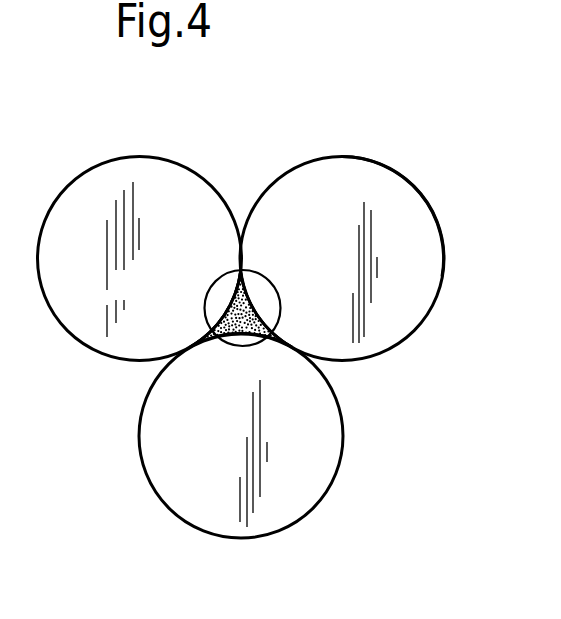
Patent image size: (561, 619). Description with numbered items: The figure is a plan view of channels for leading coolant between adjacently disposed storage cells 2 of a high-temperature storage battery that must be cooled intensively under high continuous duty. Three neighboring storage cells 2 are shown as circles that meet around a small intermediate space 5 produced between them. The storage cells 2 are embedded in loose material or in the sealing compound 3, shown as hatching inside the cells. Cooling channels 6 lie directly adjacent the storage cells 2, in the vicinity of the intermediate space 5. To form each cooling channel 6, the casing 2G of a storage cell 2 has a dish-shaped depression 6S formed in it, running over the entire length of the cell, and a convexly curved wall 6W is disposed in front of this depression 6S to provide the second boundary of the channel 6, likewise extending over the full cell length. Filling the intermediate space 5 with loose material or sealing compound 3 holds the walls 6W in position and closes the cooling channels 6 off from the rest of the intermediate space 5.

The storage cell 2 is at (398, 232).
The casing 2G is at (437, 300).
The sealing compound 3 is at (235, 305).
The intermediate space 5 is at (252, 327).
The cooling channel 6 is at (259, 340).
The dish-shaped depression 6S is at (248, 298).
The convexly curved wall 6W is at (252, 310).